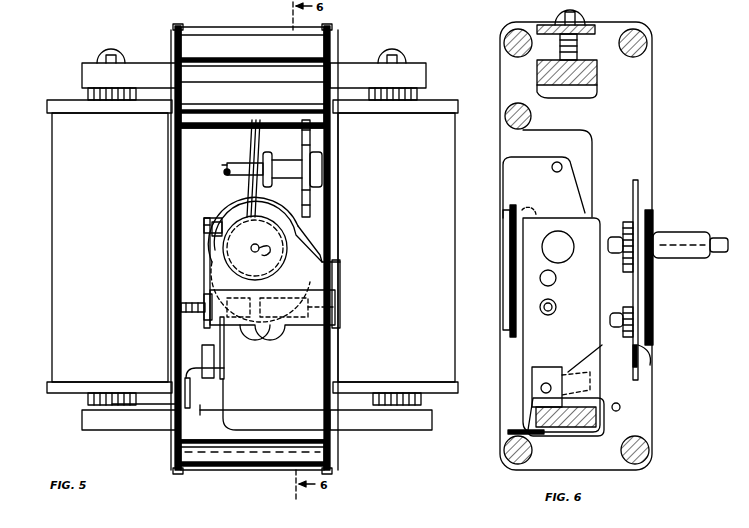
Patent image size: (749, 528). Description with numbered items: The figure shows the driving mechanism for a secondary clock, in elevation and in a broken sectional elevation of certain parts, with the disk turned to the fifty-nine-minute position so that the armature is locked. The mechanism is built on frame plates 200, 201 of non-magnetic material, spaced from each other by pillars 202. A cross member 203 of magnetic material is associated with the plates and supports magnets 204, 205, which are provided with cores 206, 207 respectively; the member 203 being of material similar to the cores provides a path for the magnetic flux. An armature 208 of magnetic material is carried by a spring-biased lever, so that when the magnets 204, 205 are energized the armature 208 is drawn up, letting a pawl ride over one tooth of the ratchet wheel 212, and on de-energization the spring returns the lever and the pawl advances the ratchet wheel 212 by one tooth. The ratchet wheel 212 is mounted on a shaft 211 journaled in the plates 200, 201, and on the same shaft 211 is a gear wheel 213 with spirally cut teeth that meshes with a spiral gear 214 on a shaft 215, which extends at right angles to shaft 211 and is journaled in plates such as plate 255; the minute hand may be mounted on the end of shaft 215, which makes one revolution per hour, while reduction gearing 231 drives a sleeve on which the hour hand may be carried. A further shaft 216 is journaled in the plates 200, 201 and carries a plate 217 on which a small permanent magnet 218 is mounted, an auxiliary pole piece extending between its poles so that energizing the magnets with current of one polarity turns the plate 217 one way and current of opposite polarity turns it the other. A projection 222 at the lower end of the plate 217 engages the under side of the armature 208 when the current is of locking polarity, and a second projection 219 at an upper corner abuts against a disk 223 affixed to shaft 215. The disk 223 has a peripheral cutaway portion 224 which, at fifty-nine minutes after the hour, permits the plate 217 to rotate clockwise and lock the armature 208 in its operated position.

In FIG. 5, the frame plate 200 is at (176, 44).
In FIG. 5, the frame plate 201 is at (332, 46).
In FIG. 5, the pillars 202 is at (252, 27).
In FIG. 5, the cross member 203 is at (355, 57).
In FIG. 5, the magnet 204 is at (52, 188).
In FIG. 5, the magnet 205 is at (455, 190).
In FIG. 5, the core 206 is at (88, 400).
In FIG. 5, the core 207 is at (425, 403).
In FIG. 5, the armature 208 is at (400, 430).
In FIG. 6, the armature 208 is at (600, 420).
In FIG. 5, the shaft 211 is at (222, 165).
In FIG. 5, the ratchet wheel 212 is at (313, 148).
In FIG. 5, the gear wheel 213 is at (262, 133).
In FIG. 5, the spiral gear 214 is at (280, 283).
In FIG. 5, the shaft 215 is at (255, 248).
In FIG. 5, the shaft 216 is at (190, 300).
In FIG. 6, the shaft 216 is at (556, 304).
In FIG. 5, the plate 217 is at (226, 356).
In FIG. 6, the plate 217 is at (570, 218).
In FIG. 5, the permanent magnet 218 is at (204, 238).
In FIG. 5, the projection 219 is at (218, 218).
In FIG. 6, the projection 219 is at (522, 210).
In FIG. 5, the projection 222 is at (226, 402).
In FIG. 6, the projection 222 is at (544, 434).
In FIG. 5, the disk 223 is at (283, 210).
In FIG. 6, the disk 223 is at (510, 300).
In FIG. 5, the peripheral cutaway portion 224 is at (248, 214).
In FIG. 6, the reduction gearing 231 is at (622, 300).
In FIG. 5, the plate 255 is at (284, 326).